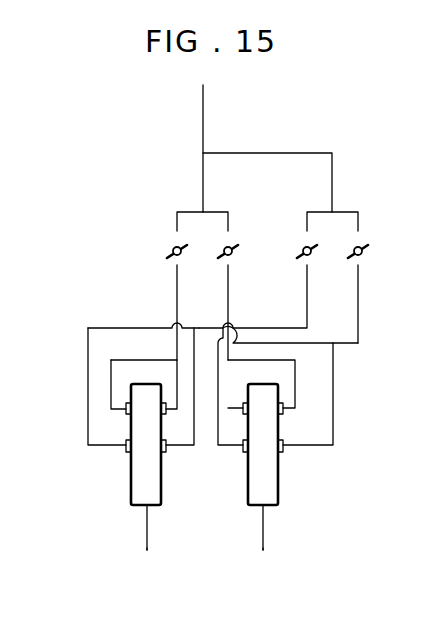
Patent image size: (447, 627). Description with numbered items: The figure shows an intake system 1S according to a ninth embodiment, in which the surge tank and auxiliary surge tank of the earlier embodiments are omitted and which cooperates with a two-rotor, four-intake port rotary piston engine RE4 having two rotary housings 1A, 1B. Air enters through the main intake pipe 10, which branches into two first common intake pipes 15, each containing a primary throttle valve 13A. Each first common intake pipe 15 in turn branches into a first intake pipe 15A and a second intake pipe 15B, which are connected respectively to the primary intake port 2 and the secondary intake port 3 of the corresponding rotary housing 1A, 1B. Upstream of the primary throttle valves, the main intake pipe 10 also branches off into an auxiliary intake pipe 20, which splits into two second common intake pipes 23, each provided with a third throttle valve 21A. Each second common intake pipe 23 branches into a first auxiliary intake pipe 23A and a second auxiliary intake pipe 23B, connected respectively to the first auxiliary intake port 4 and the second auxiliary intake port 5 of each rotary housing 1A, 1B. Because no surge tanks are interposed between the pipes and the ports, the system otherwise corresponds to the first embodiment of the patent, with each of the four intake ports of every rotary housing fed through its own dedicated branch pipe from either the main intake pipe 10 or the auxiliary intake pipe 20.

The main intake pipe 10 is at (203, 117).
The auxiliary intake pipe 20 is at (271, 153).
The primary throttle valve 13A is at (168, 257).
The third throttle valve 21A is at (300, 254).
The first common intake pipe 15 is at (177, 281).
The second common intake pipe 23 is at (268, 318).
The intake system 1S is at (88, 307).
The first intake pipe 15A is at (177, 370).
The second intake pipe 15B is at (111, 373).
The second auxiliary intake pipe 23B is at (88, 415).
The first auxiliary intake pipe 23A is at (196, 432).
The secondary intake port 3 is at (127, 414).
The second auxiliary intake port 5 is at (127, 452).
The primary intake port 2 is at (167, 415).
The first auxiliary intake port 4 is at (166, 452).
The rotary housing 1A is at (118, 511).
The rotary housing 1B is at (248, 514).
The two-rotor, four-intake port rotary piston engine RE4 is at (182, 534).